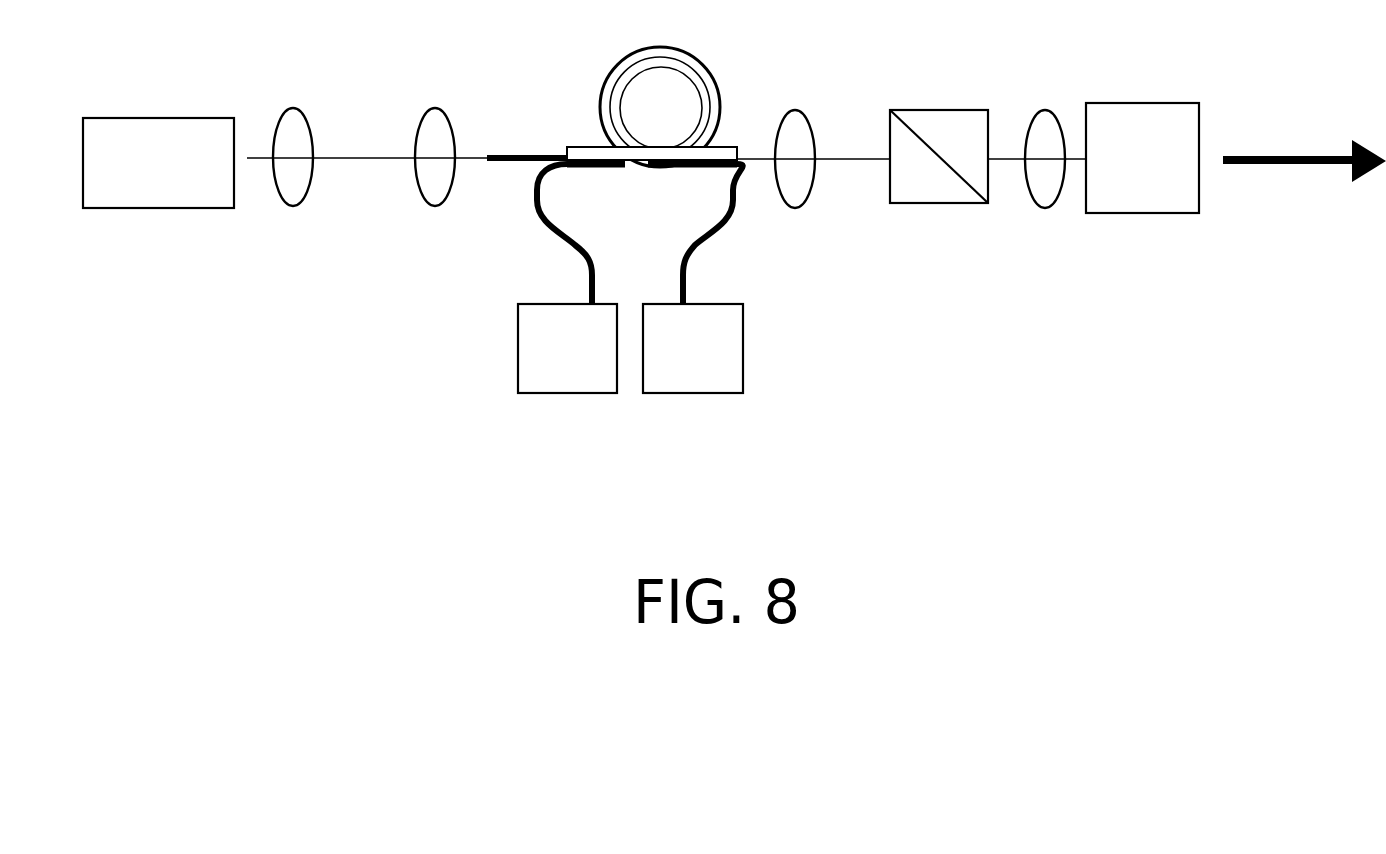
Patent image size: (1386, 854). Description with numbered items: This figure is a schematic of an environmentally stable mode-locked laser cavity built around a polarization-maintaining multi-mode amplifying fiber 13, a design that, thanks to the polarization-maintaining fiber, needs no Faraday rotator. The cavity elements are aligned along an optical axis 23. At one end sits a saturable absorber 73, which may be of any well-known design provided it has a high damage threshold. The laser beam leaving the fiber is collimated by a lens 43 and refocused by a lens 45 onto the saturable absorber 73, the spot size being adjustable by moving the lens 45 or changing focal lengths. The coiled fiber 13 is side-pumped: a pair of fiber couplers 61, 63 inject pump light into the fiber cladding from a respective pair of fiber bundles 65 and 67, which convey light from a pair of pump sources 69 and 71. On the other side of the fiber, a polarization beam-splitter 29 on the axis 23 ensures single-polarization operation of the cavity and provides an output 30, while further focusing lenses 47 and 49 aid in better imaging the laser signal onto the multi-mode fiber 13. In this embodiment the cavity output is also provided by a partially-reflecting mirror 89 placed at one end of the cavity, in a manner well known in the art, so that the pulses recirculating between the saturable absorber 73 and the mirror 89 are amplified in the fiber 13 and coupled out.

The multi-mode amplifying fiber 13 is at (717, 78).
The optical axis 23 is at (362, 162).
The polarization beam-splitter 29 is at (938, 108).
The output 30 is at (1272, 155).
The lens 43 is at (437, 108).
The lens 45 is at (295, 108).
The focusing lens 47 is at (797, 108).
The focusing lens 49 is at (1043, 108).
The fiber coupler 61 is at (593, 170).
The fiber coupler 63 is at (697, 172).
The fiber bundle 65 is at (560, 240).
The fiber bundle 67 is at (690, 260).
The pump source 69 is at (567, 395).
The pump source 71 is at (710, 395).
The saturable absorber 73 is at (133, 118).
The partially-reflecting mirror 89 is at (1142, 215).